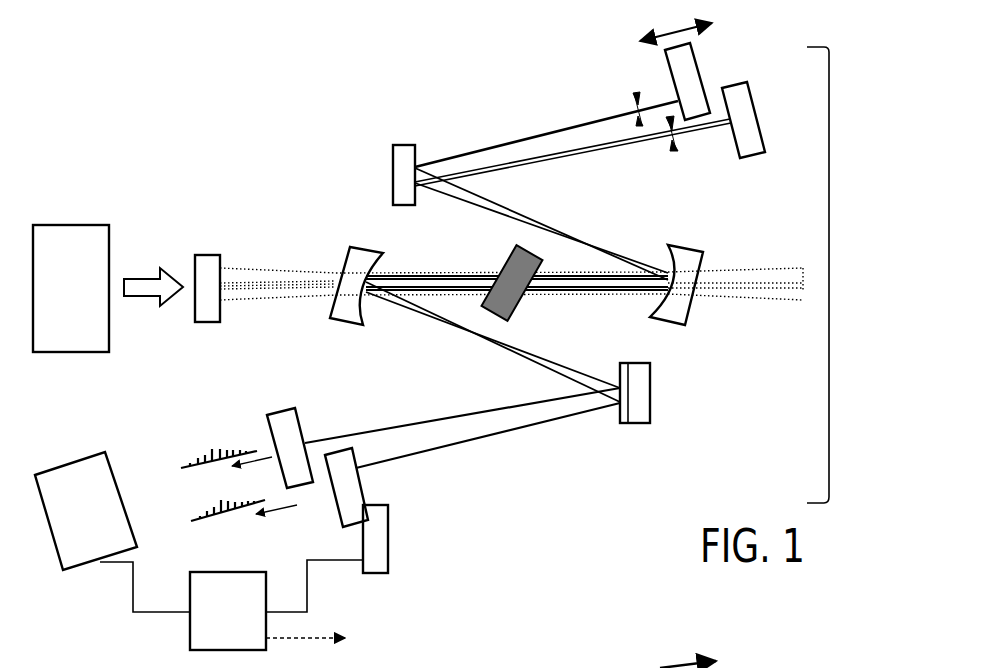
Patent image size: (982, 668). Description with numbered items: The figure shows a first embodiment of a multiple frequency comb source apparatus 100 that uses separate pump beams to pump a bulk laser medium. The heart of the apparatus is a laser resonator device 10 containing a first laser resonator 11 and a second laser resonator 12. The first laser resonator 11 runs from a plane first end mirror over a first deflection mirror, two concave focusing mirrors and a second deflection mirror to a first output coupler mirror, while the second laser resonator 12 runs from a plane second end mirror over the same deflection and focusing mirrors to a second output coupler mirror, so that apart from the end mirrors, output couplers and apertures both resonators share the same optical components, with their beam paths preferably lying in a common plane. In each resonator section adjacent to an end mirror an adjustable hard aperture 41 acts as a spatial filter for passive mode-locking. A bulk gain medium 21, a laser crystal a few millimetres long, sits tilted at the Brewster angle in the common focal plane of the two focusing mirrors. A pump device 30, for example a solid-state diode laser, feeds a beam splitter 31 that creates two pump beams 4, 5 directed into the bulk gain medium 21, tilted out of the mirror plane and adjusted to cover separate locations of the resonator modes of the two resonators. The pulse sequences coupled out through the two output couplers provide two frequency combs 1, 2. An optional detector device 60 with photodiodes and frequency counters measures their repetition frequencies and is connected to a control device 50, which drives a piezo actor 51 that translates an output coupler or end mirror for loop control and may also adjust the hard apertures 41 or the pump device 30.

The multiple frequency comb source apparatus 100 is at (233, 135).
The laser resonator device 10 is at (829, 277).
The pump device 30 is at (103, 278).
The beam splitter 31 is at (200, 258).
The first pump beam 4 is at (292, 278).
The second pump beam 5 is at (292, 288).
The bulk gain medium 21 is at (500, 270).
The first laser resonator 11 is at (560, 127).
The second laser resonator 12 is at (567, 153).
The adjustable hard aperture 41 is at (634, 108).
The first frequency comb 1 is at (224, 441).
The second frequency comb 2 is at (232, 504).
The piezo actor 51 is at (382, 543).
The control device 50 is at (255, 627).
The detector device 60 is at (105, 536).